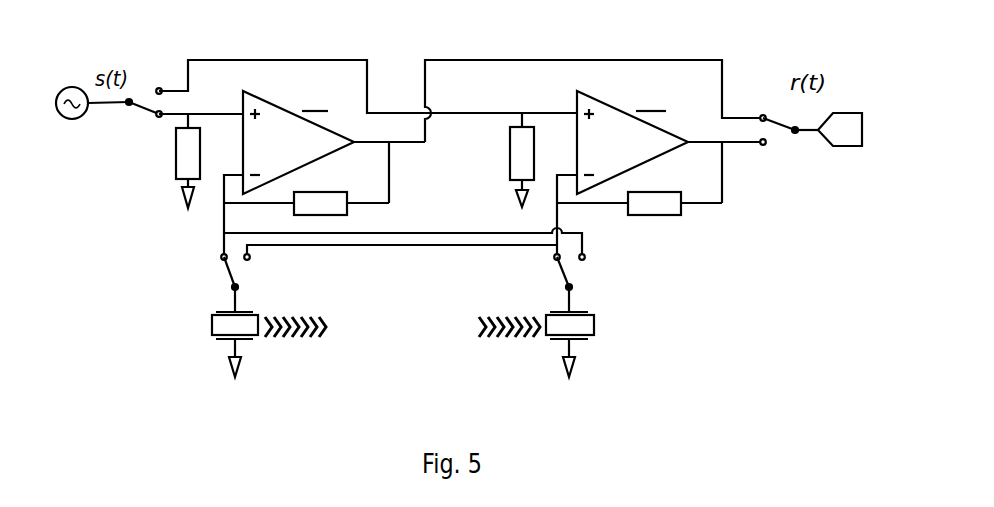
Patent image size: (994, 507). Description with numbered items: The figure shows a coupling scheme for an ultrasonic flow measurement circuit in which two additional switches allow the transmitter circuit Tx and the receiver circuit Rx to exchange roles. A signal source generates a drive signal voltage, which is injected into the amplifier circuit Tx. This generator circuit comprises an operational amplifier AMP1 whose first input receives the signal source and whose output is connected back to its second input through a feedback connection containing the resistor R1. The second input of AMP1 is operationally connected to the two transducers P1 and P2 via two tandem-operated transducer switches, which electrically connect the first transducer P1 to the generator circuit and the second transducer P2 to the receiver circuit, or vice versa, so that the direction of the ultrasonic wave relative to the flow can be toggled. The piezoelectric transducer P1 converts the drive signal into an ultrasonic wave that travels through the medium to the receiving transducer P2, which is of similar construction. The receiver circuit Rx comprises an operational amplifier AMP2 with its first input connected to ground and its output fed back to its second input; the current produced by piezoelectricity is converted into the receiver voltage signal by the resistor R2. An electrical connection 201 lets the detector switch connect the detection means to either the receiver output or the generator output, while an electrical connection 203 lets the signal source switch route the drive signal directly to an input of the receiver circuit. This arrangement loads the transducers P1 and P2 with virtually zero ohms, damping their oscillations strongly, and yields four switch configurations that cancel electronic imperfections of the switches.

The electrical connection 201 is at (467, 60).
The electrical connection 203 is at (328, 59).
The operational amplifier AMP1 is at (298, 142).
The operational amplifier AMP2 is at (632, 142).
The feedback resistor R1 is at (306, 191).
The resistor R2 is at (639, 190).
The piezoelectric transducer P1 is at (249, 332).
The receiving transducer P2 is at (557, 332).
The amplifier circuit Tx is at (314, 99).
The receiver circuit Rx is at (651, 100).